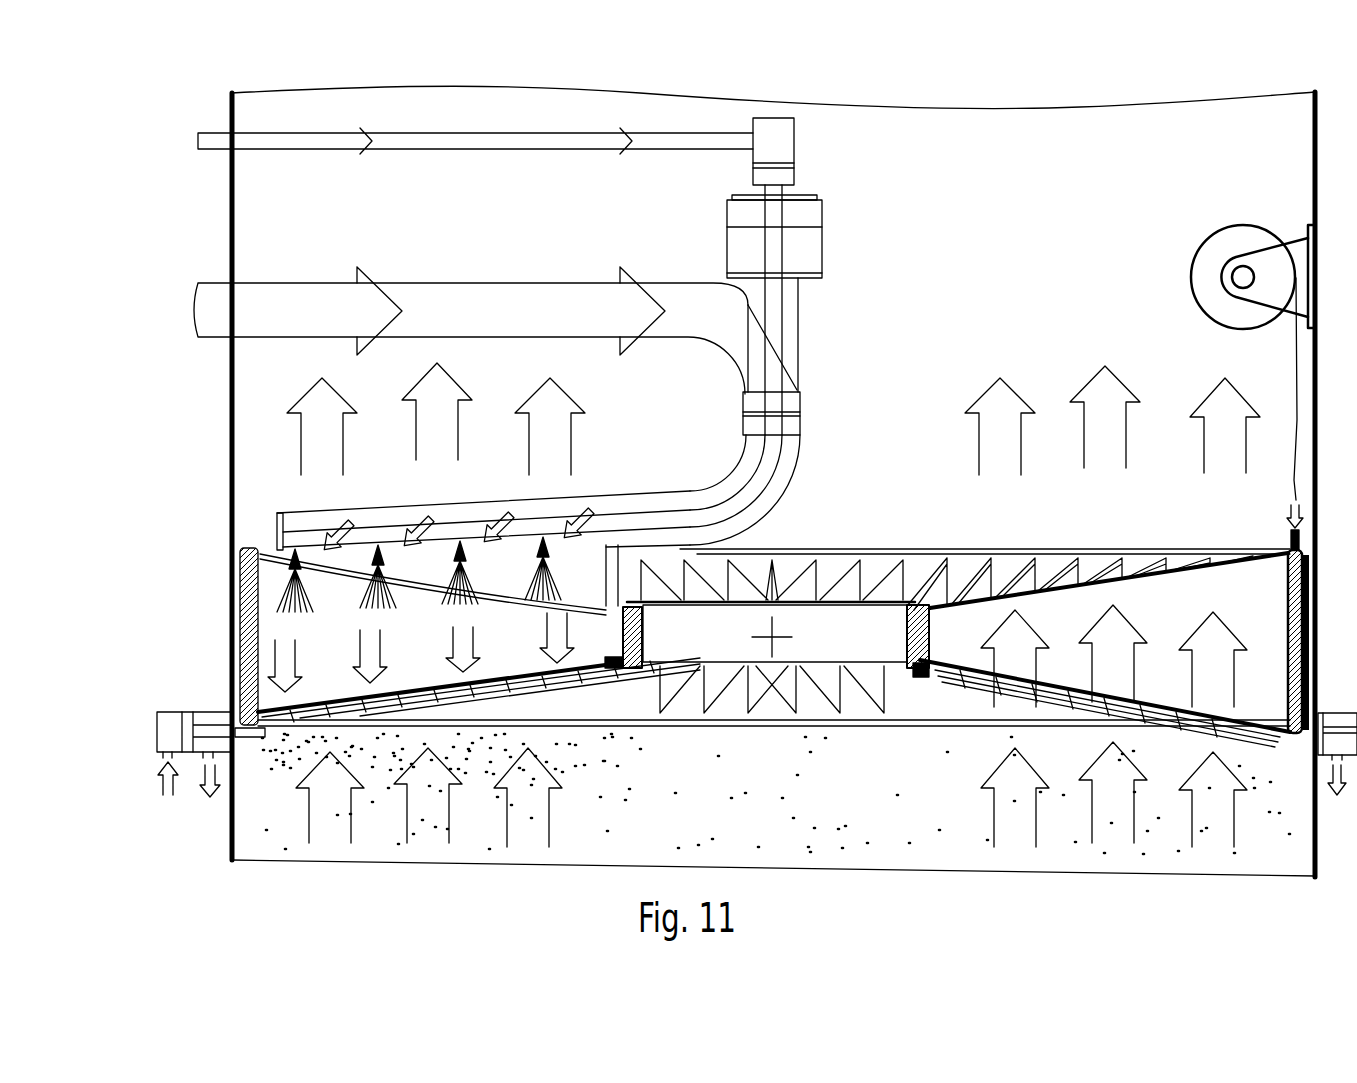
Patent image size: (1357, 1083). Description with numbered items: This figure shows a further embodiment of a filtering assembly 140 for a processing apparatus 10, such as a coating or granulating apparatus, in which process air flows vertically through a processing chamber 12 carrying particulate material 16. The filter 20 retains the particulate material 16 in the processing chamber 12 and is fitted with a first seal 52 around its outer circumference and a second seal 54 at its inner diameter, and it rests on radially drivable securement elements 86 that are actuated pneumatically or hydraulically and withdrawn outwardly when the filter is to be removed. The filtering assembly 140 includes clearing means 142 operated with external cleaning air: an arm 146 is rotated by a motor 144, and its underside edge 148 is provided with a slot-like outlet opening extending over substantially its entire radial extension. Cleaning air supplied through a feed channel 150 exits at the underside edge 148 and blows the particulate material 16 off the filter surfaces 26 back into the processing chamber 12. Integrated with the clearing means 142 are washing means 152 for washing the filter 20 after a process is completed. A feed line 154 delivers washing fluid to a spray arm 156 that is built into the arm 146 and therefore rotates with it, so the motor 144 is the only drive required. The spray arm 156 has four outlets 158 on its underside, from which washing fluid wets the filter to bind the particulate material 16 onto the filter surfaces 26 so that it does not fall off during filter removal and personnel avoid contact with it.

The processing apparatus 10 is at (182, 235).
The processing chamber 12 is at (600, 818).
The particulate material 16 is at (427, 738).
The filter 20 is at (880, 566).
The filter surfaces 26 is at (330, 656).
The first seal 52 is at (240, 608).
The second seal 54 is at (930, 632).
The securement elements 86 is at (233, 790).
The filtering assembly 140 is at (868, 374).
The clearing means 142 is at (632, 478).
The motor 144 is at (797, 253).
The arm 146 is at (375, 520).
The underside edge 148 is at (418, 583).
The feed channel 150 is at (250, 317).
The washing means 152 is at (466, 524).
The feed line 154 is at (393, 142).
The spray arm 156 is at (543, 527).
The outlets 158 is at (293, 533).